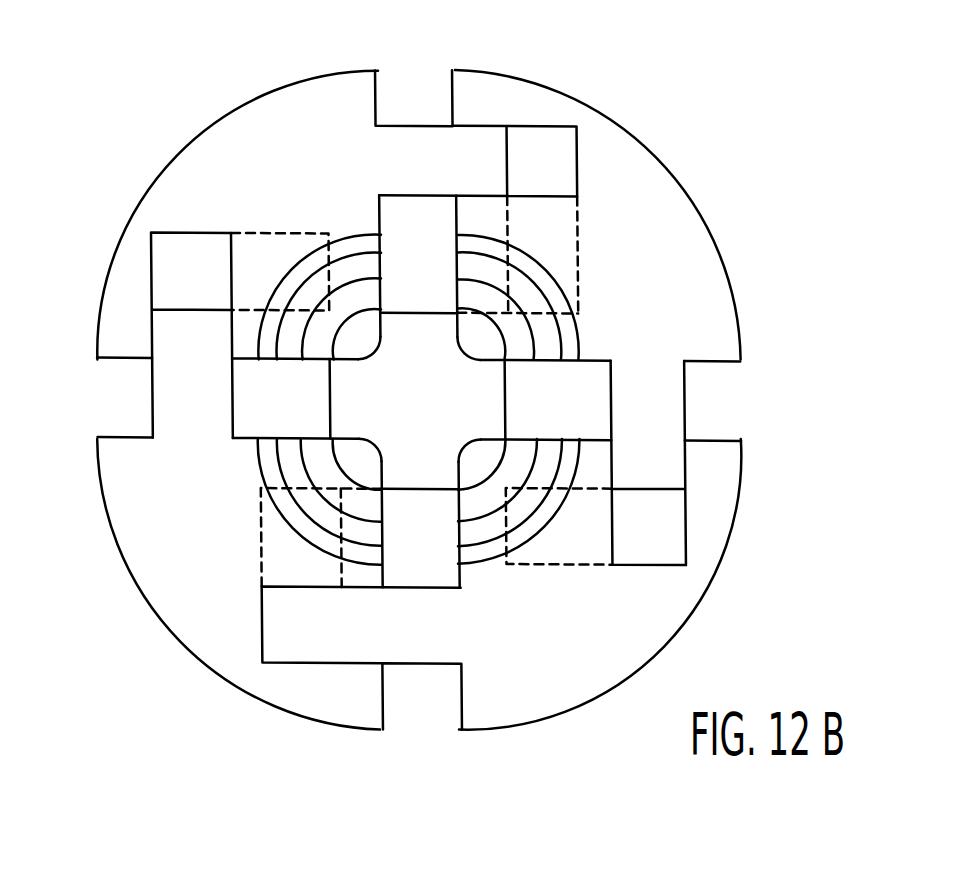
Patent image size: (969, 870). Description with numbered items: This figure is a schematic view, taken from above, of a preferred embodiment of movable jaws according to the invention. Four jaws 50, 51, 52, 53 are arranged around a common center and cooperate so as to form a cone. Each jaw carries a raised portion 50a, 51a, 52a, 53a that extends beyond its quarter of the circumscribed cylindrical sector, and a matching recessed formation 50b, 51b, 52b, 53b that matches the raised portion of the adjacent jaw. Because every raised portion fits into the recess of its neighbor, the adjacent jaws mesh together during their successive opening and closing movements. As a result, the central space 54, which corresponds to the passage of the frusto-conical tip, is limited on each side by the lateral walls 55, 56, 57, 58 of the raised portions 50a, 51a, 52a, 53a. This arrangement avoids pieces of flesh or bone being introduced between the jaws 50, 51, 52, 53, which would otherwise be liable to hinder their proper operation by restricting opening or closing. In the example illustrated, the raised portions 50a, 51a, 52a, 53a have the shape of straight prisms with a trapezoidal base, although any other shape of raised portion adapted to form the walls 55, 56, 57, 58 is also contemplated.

The jaw 50 is at (232, 131).
The raised portion 50a is at (425, 123).
The recessed formation 50b is at (152, 270).
The jaw 51 is at (639, 154).
The raised portion 51a is at (675, 405).
The recessed formation 51b is at (565, 128).
The jaw 52 is at (603, 643).
The raised portion 52a is at (423, 660).
The recessed formation 52b is at (686, 544).
The jaw 53 is at (140, 560).
The raised portion 53a is at (148, 373).
The recessed formation 53b is at (305, 662).
The central space 54 is at (437, 414).
The lateral wall 55 is at (418, 316).
The lateral wall 56 is at (503, 418).
The lateral wall 57 is at (415, 490).
The lateral wall 58 is at (358, 405).